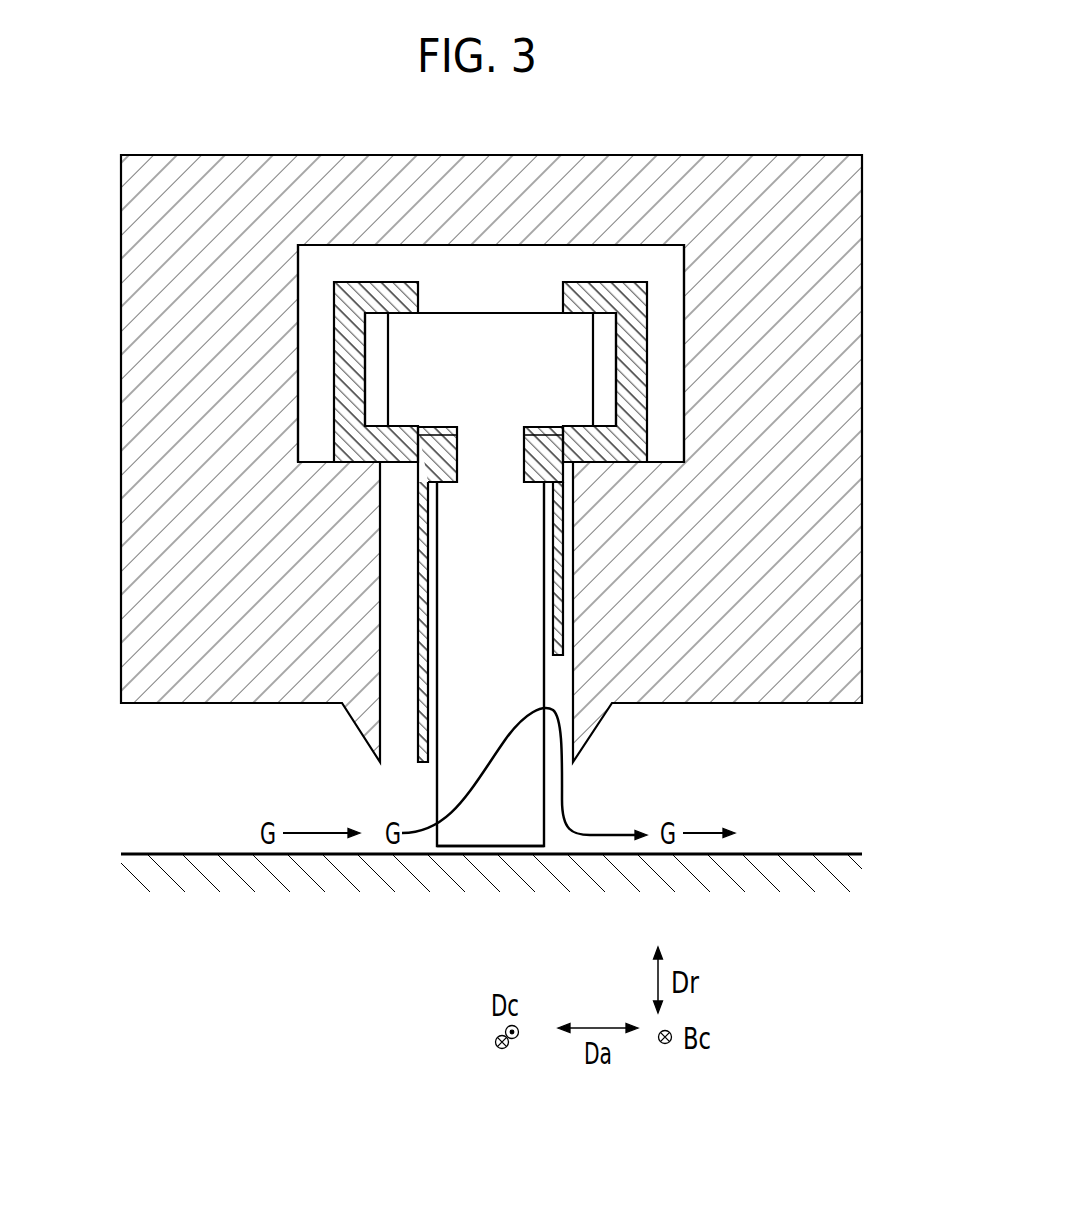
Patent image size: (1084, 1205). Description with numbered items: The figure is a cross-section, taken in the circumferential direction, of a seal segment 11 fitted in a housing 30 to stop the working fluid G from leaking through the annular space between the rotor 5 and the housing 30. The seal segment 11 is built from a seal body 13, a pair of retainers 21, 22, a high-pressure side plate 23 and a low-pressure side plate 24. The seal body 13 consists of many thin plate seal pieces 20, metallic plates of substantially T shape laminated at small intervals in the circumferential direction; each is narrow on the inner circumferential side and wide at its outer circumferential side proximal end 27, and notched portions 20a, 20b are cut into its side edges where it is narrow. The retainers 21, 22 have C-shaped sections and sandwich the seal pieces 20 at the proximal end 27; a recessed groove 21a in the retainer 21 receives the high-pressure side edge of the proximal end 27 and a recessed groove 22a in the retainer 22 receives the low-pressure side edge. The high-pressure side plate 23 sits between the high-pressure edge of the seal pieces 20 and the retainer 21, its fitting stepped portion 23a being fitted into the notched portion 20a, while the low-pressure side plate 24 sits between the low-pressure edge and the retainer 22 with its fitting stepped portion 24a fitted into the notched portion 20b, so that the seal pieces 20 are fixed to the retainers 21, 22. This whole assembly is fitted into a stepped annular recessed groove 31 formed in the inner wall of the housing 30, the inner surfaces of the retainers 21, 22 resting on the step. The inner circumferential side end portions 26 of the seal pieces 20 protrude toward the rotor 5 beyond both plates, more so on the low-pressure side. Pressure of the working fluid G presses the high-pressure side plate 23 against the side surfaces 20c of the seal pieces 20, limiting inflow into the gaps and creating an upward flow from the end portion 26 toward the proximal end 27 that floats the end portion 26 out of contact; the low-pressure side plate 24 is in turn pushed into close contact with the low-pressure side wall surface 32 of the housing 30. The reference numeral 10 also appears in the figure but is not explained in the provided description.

The rotor 5 is at (820, 852).
The recess corner 10 is at (628, 256).
The seal segment 11 is at (578, 266).
The seal body 13 is at (449, 292).
The thin plate seal piece 20 is at (453, 658).
The notched portion 20a is at (452, 460).
The notched portion 20b is at (537, 464).
The side surface 20c is at (433, 703).
The retainer 21 is at (343, 349).
The recessed groove 21a is at (364, 375).
The retainer 22 is at (630, 355).
The recessed groove 22a is at (617, 373).
The high-pressure side plate 23 is at (404, 629).
The fitting stepped portion 23a is at (445, 458).
The low-pressure side plate 24 is at (575, 577).
The fitting stepped portion 24a is at (540, 452).
The inner circumferential side end portion 26 is at (491, 828).
The outer circumferential side proximal end 27 is at (491, 322).
The housing 30 is at (837, 254).
The annular recessed groove 31 is at (523, 253).
The low-pressure side wall surface 32 is at (564, 636).